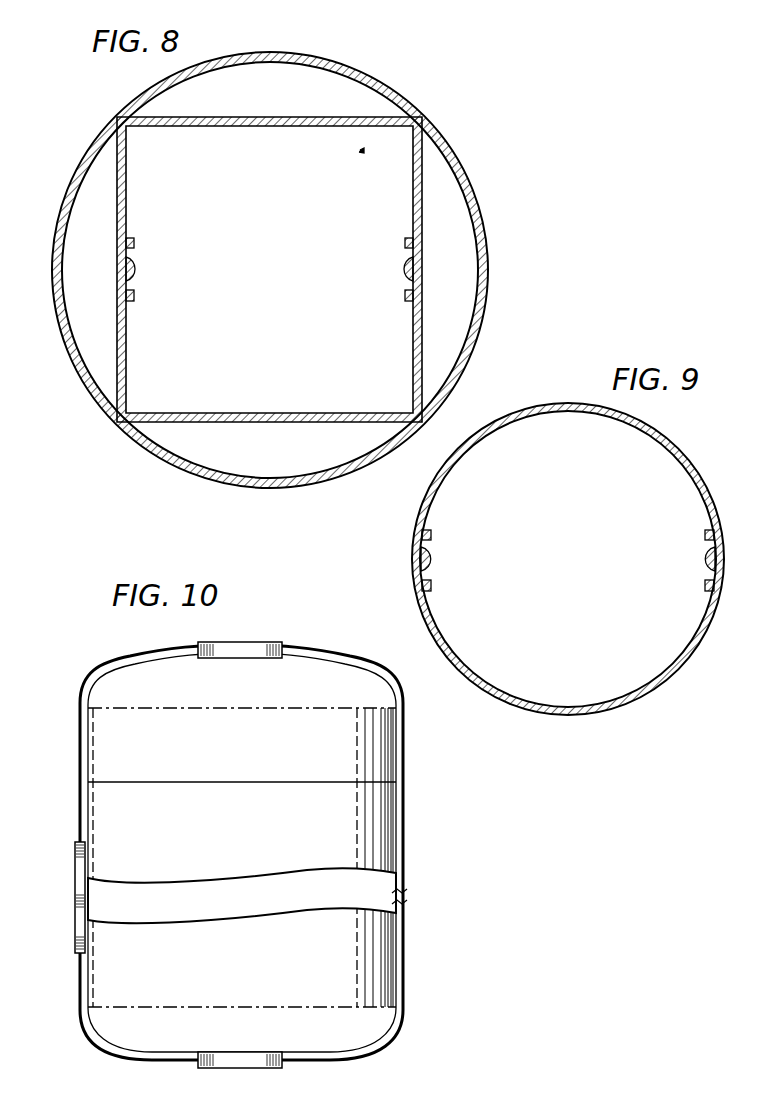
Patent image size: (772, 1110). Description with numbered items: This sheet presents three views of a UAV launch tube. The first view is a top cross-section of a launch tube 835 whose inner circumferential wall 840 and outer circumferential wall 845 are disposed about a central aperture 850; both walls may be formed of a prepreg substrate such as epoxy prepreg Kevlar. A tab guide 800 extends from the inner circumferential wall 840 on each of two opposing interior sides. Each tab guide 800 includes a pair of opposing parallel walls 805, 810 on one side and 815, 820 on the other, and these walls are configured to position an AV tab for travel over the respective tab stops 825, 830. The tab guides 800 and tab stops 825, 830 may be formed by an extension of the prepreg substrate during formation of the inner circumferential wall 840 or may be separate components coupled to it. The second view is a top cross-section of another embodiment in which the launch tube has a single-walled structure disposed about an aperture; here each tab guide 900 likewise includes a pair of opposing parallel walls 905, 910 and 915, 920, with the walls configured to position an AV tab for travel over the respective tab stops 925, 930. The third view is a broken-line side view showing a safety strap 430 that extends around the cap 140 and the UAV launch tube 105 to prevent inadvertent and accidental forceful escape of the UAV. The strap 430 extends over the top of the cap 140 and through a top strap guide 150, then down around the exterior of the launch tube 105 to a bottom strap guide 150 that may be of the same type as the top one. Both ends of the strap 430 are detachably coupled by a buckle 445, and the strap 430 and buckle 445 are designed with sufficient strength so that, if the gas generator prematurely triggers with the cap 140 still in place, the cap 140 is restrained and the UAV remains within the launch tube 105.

In FIG. 8, the launch tube 835 is at (300, 266).
In FIG. 8, the outer circumferential wall 845 is at (480, 206).
In FIG. 8, the inner circumferential wall 840 is at (420, 162).
In FIG. 8, the aperture 850 is at (364, 148).
In FIG. 8, the tab guide 800 is at (164, 286).
In FIG. 8, the parallel wall 805 is at (136, 243).
In FIG. 8, the parallel wall 810 is at (136, 297).
In FIG. 8, the tab stop 825 is at (134, 270).
In FIG. 8, the parallel wall 815 is at (403, 243).
In FIG. 8, the parallel wall 820 is at (403, 297).
In FIG. 8, the tab stop 830 is at (405, 270).
In FIG. 9, the tab guide 900 is at (568, 559).
In FIG. 9, the parallel wall 905 is at (434, 534).
In FIG. 9, the parallel wall 910 is at (434, 588).
In FIG. 9, the tab stop 925 is at (432, 560).
In FIG. 9, the parallel wall 920 is at (702, 534).
In FIG. 9, the parallel wall 915 is at (702, 588).
In FIG. 9, the tab stop 930 is at (704, 560).
In FIG. 10, the UAV launch tube 105 is at (253, 847).
In FIG. 10, the cap 140 is at (132, 656).
In FIG. 10, the strap guide 150 is at (258, 642).
In FIG. 10, the safety strap 430 is at (404, 960).
In FIG. 10, the buckle 445 is at (75, 906).